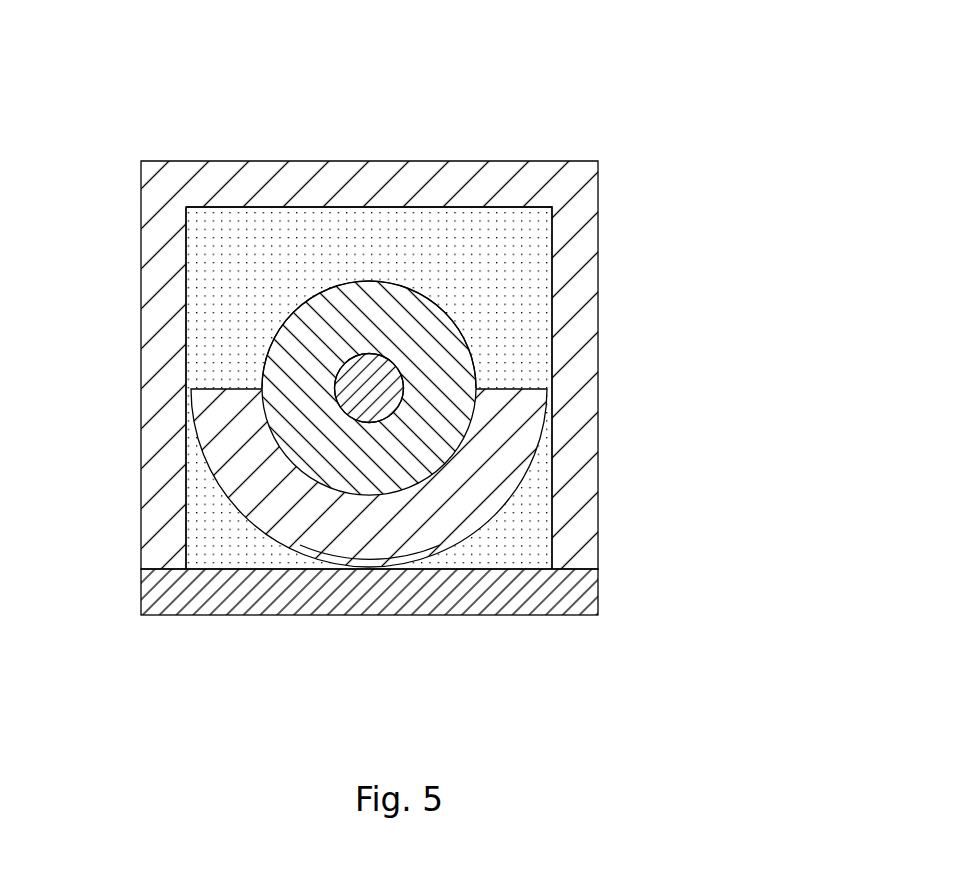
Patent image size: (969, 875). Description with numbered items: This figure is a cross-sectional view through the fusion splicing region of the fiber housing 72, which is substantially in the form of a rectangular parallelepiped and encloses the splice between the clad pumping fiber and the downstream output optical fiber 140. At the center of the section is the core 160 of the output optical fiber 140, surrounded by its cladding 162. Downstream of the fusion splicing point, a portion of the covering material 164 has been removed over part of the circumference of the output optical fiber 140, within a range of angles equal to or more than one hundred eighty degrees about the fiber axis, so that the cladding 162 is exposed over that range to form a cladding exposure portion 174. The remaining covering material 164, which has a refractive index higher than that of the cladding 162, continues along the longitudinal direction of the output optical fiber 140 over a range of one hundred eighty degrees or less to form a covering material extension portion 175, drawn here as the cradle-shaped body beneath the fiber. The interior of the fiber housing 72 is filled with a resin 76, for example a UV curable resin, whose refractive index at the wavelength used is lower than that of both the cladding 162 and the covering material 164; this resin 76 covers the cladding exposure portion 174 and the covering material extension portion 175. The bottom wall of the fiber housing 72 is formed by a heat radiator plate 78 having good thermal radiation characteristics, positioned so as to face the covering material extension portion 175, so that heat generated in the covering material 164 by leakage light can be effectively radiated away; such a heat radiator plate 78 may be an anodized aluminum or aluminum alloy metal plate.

The fiber housing 72 is at (594, 104).
The resin 76 is at (235, 295).
The heat radiator plate 78 is at (284, 606).
The output optical fiber 140 is at (512, 279).
The core 160 is at (399, 401).
The cladding 162 is at (283, 393).
The covering material 164 is at (492, 496).
The cladding exposure portion 174 is at (372, 282).
The covering material extension portion 175 is at (463, 540).